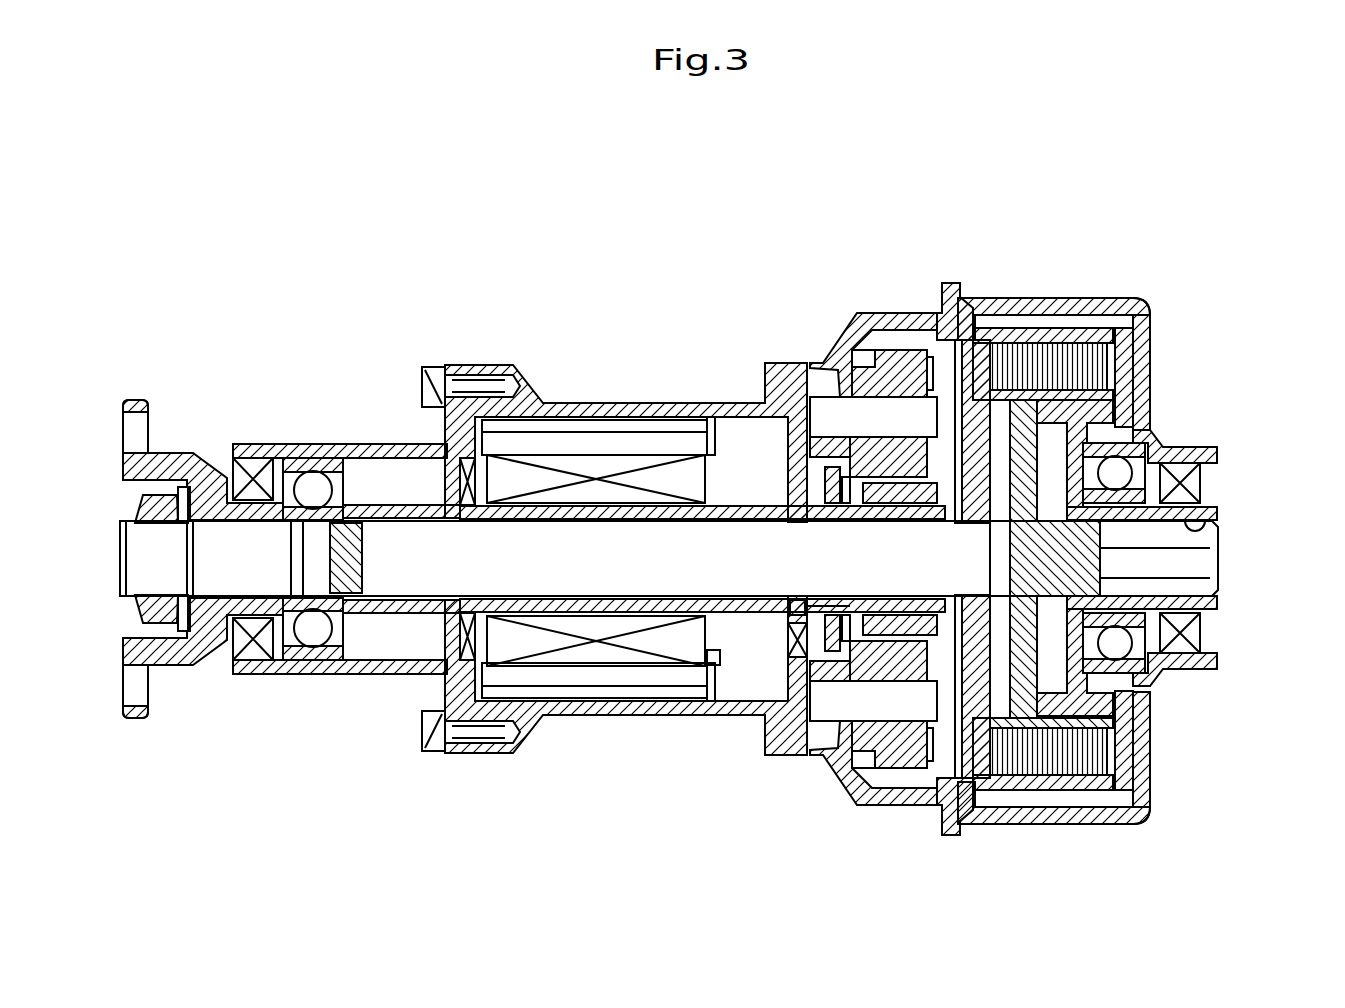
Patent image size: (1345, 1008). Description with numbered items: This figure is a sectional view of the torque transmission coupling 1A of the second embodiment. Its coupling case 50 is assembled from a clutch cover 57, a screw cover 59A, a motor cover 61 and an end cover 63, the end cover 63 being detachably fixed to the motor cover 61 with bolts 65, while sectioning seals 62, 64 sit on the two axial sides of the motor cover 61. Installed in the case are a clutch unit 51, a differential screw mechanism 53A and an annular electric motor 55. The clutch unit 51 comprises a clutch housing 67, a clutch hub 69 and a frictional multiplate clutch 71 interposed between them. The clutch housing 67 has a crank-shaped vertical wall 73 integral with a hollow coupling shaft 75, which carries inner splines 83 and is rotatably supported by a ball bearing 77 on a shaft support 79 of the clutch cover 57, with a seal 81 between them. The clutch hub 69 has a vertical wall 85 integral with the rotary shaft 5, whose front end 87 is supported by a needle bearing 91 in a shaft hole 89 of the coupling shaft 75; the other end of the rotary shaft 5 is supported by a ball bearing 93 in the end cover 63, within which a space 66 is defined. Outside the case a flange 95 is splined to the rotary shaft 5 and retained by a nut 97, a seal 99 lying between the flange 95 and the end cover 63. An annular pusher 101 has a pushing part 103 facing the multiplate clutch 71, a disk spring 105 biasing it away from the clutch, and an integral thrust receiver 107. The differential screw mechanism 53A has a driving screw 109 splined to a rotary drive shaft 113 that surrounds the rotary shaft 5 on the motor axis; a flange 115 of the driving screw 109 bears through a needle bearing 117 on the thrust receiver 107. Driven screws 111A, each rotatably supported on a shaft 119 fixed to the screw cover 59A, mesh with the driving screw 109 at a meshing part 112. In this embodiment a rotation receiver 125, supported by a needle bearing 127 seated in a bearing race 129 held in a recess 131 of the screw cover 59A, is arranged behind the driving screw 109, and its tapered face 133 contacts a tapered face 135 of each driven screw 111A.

The torque transmission coupling 1A is at (725, 495).
The rotary shaft 5 is at (583, 545).
The coupling case 50 is at (1089, 504).
The clutch unit 51 is at (1150, 318).
The differential screw mechanism 53A is at (890, 370).
The electric motor 55 is at (623, 442).
The clutch cover 57 is at (1150, 343).
The screw cover 59A is at (906, 347).
The motor cover 61 is at (664, 400).
The sectioning seal 62 is at (703, 648).
The end cover 63 is at (378, 443).
The sectioning seal 64 is at (437, 640).
The bolts 65 is at (430, 368).
The space 66 is at (365, 628).
The clutch housing 67 is at (1040, 340).
The clutch hub 69 is at (1130, 395).
The frictional multiplate clutch 71 is at (1112, 296).
The vertical wall 73 is at (1150, 383).
The coupling shaft 75 is at (1210, 508).
The ball bearing 77 is at (1115, 442).
The shaft support 79 is at (1170, 442).
The seal 81 is at (1195, 473).
The inner splines 83 is at (1200, 525).
The vertical wall 85 is at (1000, 548).
The front end 87 is at (1100, 578).
The shaft hole 89 is at (1200, 632).
The needle bearing 91 is at (1100, 548).
The ball bearing 93 is at (318, 456).
The flange 95 is at (135, 398).
The nut 97 is at (160, 505).
The seal 99 is at (250, 468).
The pusher 101 is at (960, 398).
The pushing part 103 is at (968, 340).
The disk spring 105 is at (1000, 340).
The thrust receiver 107 is at (970, 525).
The driving screw 109 is at (868, 520).
The driven screws 111A is at (845, 392).
The meshing part 112 is at (748, 714).
The rotary drive shaft 113 is at (745, 415).
The flange 115 is at (892, 525).
The needle bearing 117 is at (950, 338).
The shaft 119 is at (830, 398).
The rotation receiver 125 is at (850, 612).
The needle bearing 127 is at (790, 615).
The bearing race 129 is at (805, 607).
The recess 131 is at (790, 653).
The tapered face 133 is at (825, 470).
The tapered face 135 is at (825, 485).